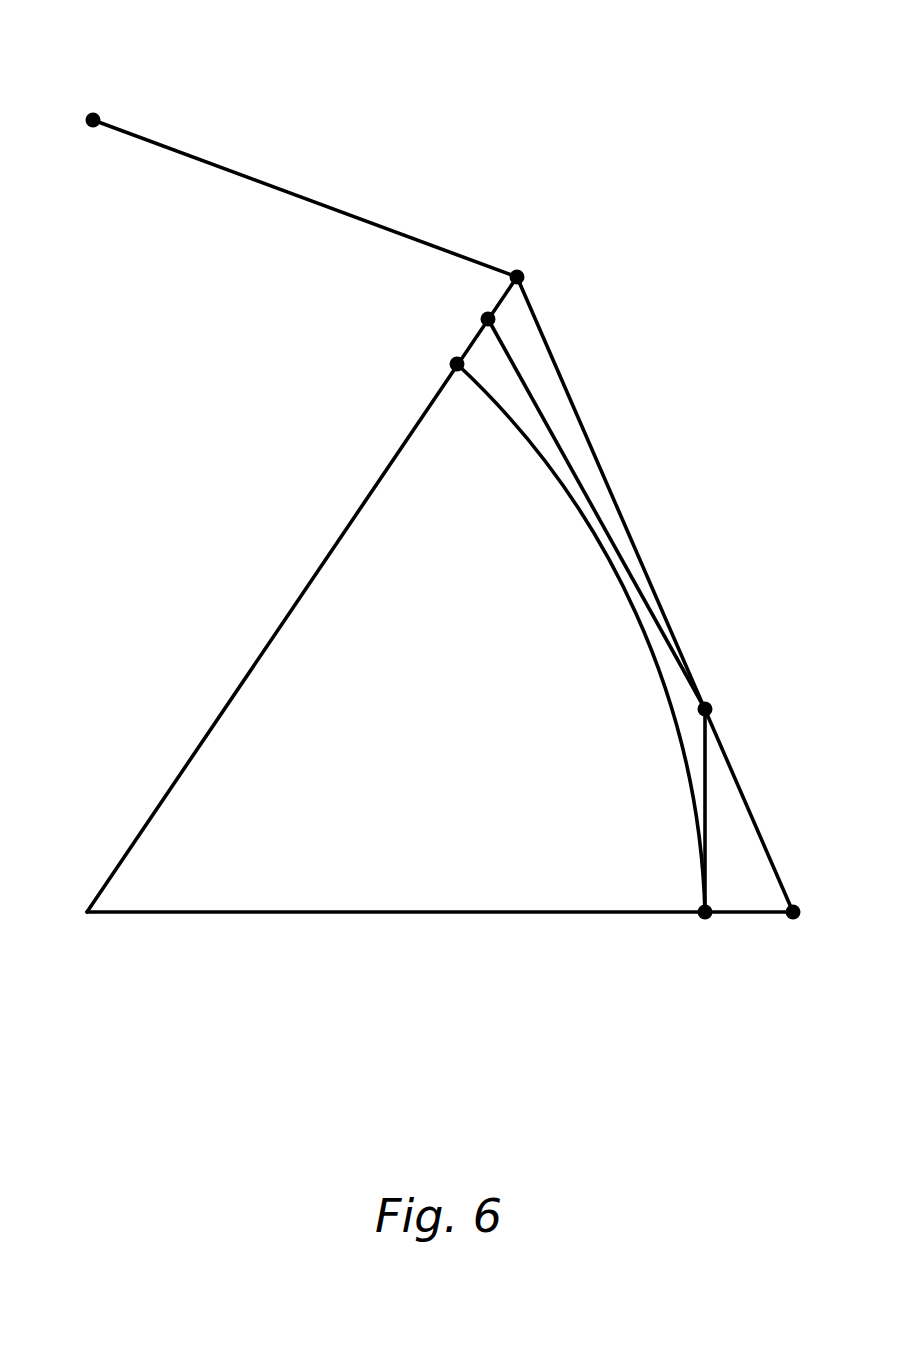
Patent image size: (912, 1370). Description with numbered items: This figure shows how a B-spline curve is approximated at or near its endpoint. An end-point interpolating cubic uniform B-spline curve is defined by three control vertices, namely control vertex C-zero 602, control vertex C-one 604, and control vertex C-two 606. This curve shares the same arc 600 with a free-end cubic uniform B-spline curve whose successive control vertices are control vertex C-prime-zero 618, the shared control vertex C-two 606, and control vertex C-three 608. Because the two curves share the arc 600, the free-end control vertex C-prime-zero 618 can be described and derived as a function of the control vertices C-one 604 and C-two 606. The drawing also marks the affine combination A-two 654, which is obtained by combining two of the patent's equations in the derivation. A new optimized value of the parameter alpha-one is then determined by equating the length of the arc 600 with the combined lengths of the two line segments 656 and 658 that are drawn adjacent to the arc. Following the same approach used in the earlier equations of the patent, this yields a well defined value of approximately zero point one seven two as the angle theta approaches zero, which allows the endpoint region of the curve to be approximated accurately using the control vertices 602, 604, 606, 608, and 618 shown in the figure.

The arc 600 is at (546, 455).
The control vertex C0 602 is at (704, 920).
The control vertex C1 604 is at (707, 708).
The control vertex C2 606 is at (519, 276).
The control vertex C3 608 is at (93, 118).
The control vertex C'0 618 is at (793, 920).
The affine combination A2 654 is at (486, 319).
The line segment 656 is at (706, 812).
The line segment 658 is at (527, 392).